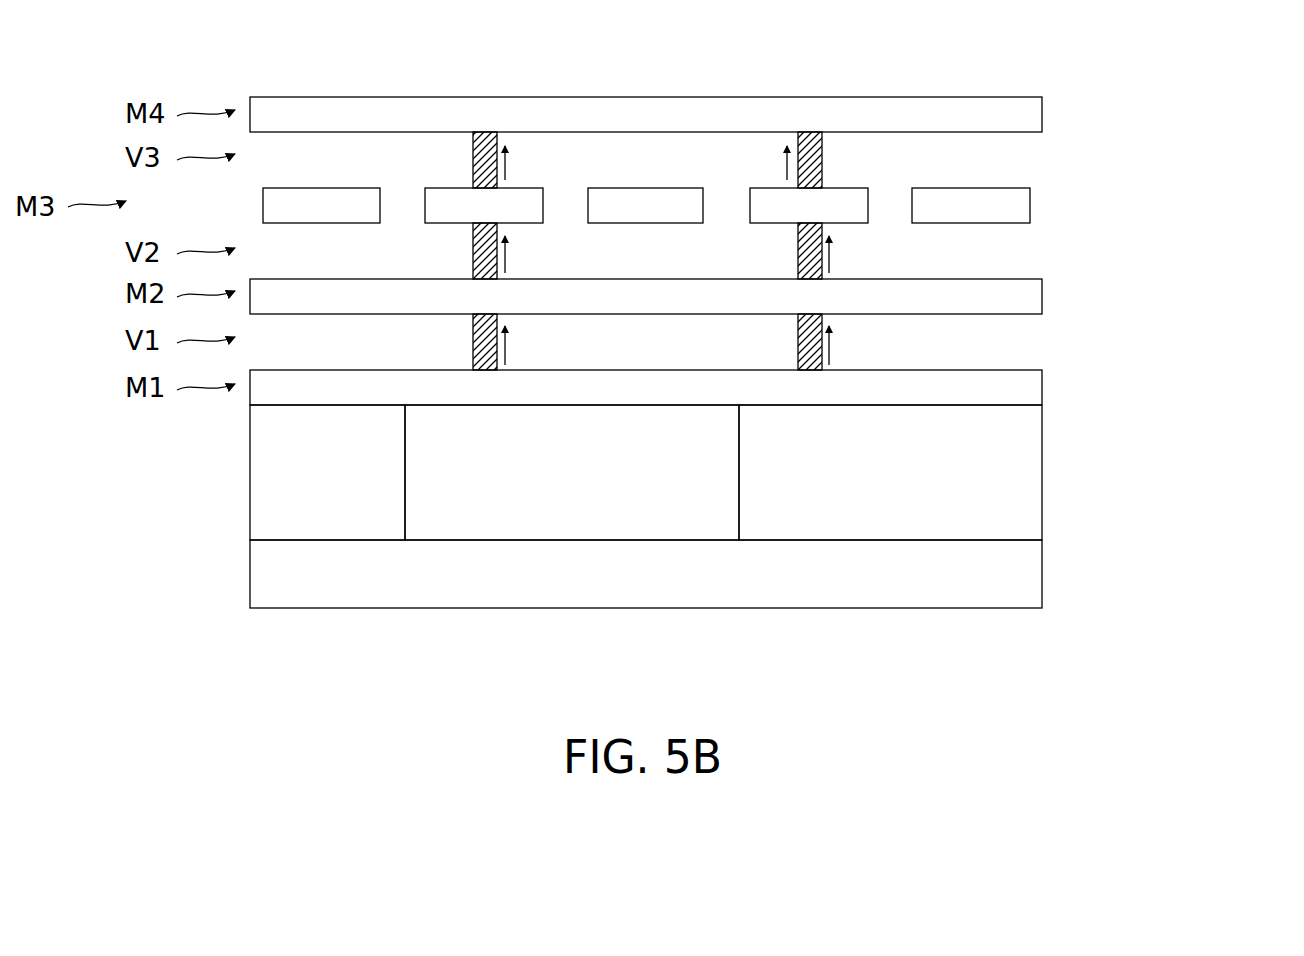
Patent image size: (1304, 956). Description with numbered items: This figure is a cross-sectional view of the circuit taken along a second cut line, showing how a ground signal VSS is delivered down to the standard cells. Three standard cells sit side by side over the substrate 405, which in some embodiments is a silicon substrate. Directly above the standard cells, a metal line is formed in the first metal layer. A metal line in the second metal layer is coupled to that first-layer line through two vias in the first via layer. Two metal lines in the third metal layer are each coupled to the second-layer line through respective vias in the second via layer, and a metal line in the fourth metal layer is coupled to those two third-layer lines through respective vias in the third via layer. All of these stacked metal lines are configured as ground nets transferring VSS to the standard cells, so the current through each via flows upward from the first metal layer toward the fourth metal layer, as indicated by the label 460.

The label 460 is at (833, 346).
The substrate 405 is at (1045, 573).